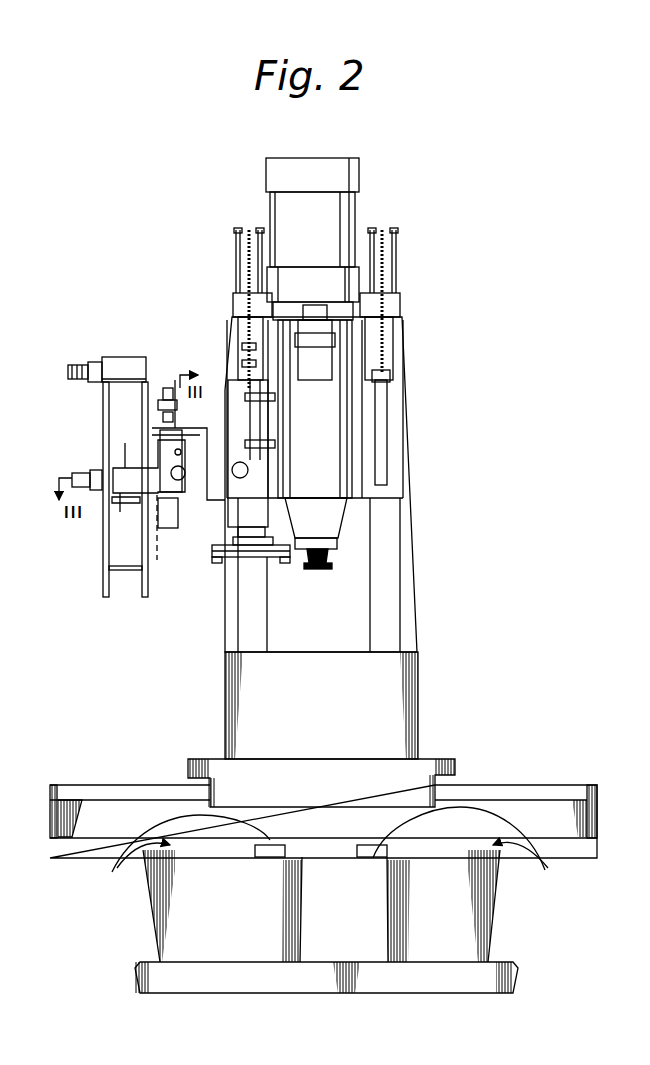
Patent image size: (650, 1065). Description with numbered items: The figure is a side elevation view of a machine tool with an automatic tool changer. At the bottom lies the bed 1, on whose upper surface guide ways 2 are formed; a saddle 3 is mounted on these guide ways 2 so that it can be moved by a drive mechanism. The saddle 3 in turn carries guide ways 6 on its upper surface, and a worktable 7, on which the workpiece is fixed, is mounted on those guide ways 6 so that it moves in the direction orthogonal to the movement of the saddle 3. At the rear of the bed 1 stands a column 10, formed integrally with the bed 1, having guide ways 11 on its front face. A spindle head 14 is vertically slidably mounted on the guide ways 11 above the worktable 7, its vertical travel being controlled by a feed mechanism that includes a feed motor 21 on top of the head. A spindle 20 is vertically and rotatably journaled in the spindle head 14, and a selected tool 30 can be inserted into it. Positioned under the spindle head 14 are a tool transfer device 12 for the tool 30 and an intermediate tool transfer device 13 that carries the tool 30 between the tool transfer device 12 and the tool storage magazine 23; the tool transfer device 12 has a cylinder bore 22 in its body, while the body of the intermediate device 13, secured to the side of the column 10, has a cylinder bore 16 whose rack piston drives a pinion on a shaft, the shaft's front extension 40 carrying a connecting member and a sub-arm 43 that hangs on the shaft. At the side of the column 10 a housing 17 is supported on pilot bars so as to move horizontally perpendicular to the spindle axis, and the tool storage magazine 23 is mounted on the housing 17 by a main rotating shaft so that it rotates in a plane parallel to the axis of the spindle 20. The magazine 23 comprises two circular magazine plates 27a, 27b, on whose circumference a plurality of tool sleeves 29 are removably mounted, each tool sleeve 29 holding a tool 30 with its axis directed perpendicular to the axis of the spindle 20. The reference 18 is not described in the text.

The bed 1 is at (303, 958).
The guide ways 2 is at (323, 852).
The saddle 3 is at (73, 815).
The guide ways 6 is at (527, 785).
The worktable 7 is at (455, 766).
The column 10 is at (393, 690).
The guide ways 11 is at (390, 585).
The tool transfer device 12 is at (238, 562).
The intermediate tool transfer device 13 is at (127, 510).
The spindle head 14 is at (372, 430).
The cylinder bore 16 is at (156, 443).
The housing 17 is at (262, 560).
The guide line 18 is at (164, 546).
The spindle 20 is at (340, 540).
The feed motor 21 is at (282, 206).
The cylinder bore 22 is at (233, 460).
The tool storage magazine 23 is at (115, 402).
The circular magazine plate 27a is at (105, 583).
The circular magazine plate 27b is at (143, 588).
The tool sleeve 29 is at (122, 360).
The tool 30 is at (73, 373).
The extension 40 is at (222, 518).
The sub-arm 43 is at (143, 455).